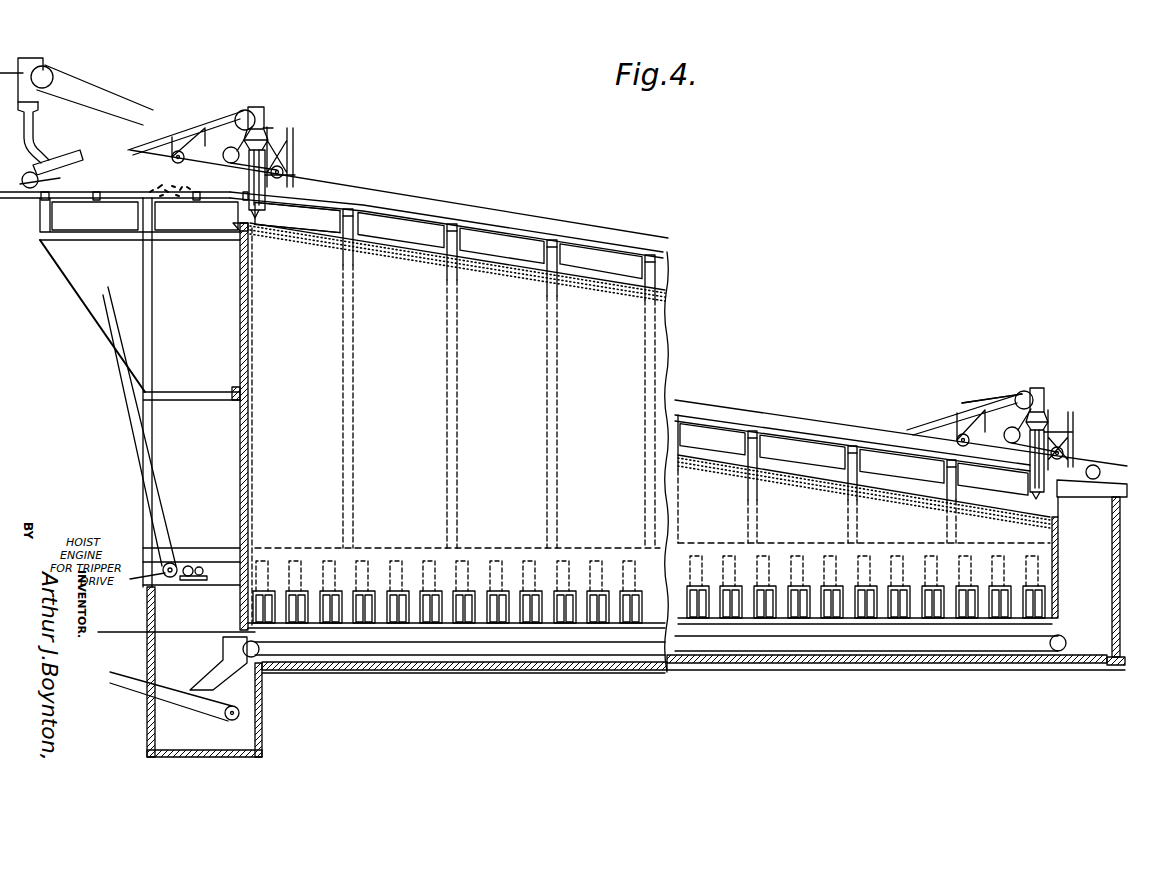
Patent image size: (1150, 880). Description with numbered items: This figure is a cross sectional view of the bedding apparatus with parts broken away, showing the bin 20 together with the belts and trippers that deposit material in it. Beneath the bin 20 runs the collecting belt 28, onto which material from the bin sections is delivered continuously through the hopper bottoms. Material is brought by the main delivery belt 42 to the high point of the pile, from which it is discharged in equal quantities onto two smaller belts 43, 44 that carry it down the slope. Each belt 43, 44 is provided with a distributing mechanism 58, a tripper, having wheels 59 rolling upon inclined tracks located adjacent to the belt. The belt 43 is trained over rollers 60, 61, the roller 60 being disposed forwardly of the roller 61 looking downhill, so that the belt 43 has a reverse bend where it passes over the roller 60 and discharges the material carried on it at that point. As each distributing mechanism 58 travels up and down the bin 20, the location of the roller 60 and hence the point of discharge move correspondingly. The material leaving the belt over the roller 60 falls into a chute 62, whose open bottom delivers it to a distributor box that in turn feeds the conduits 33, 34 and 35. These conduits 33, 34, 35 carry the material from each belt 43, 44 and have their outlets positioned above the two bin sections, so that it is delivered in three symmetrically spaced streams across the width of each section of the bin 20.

The bin 20 is at (667, 331).
The collecting belt 28 is at (527, 645).
The conduit (chute) 33 is at (243, 233).
The conduit (chute) 34 is at (270, 205).
The conduit (chute) 35 is at (250, 210).
The main delivery belt 42 is at (100, 84).
The belt 43 is at (128, 150).
The belt 44 is at (965, 403).
The distributing mechanism 58 is at (193, 140).
The wheels 59 is at (284, 172).
The roller 60 is at (244, 110).
The roller 61 is at (229, 162).
The chute 62 is at (266, 108).